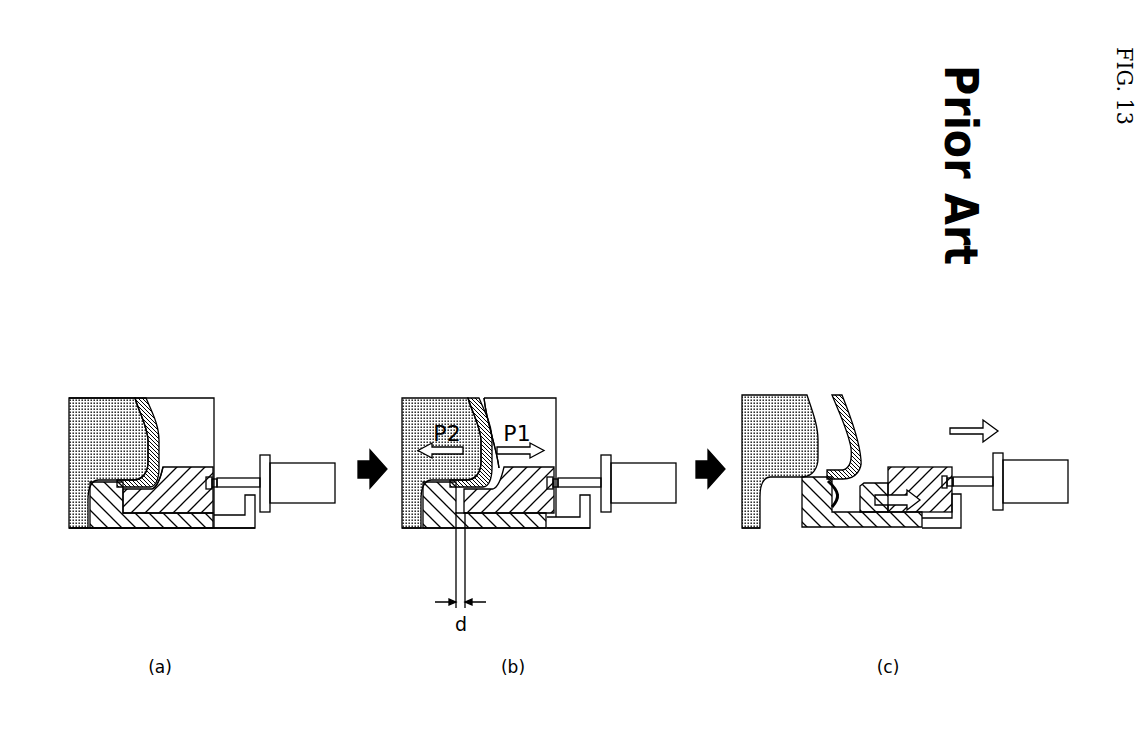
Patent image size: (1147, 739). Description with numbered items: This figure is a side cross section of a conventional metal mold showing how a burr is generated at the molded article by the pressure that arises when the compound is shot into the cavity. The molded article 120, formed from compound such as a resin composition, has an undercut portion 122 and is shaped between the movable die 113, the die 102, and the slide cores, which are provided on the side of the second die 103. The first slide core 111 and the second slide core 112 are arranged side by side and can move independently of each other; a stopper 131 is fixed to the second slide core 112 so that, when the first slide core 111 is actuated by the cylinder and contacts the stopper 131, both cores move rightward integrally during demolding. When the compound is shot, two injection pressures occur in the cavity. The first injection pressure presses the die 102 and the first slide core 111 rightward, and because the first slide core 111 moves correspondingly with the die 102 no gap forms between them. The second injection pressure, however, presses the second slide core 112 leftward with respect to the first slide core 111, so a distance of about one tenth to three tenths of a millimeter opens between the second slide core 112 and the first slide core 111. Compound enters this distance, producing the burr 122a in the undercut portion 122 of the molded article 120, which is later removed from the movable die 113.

The die 102 is at (200, 407).
The second die 103 is at (95, 544).
The first slide core 111 is at (190, 513).
The second slide core 112 is at (143, 530).
The movable die 113 is at (90, 402).
The molded article 120 is at (135, 397).
The undercut portion 122 is at (168, 468).
The burr 122a is at (838, 508).
The stopper 131 is at (252, 520).